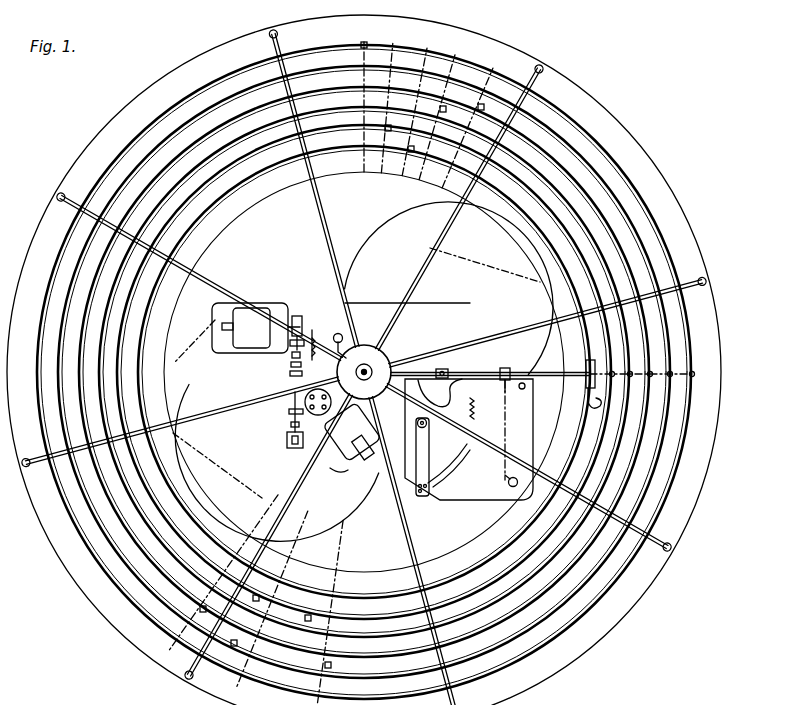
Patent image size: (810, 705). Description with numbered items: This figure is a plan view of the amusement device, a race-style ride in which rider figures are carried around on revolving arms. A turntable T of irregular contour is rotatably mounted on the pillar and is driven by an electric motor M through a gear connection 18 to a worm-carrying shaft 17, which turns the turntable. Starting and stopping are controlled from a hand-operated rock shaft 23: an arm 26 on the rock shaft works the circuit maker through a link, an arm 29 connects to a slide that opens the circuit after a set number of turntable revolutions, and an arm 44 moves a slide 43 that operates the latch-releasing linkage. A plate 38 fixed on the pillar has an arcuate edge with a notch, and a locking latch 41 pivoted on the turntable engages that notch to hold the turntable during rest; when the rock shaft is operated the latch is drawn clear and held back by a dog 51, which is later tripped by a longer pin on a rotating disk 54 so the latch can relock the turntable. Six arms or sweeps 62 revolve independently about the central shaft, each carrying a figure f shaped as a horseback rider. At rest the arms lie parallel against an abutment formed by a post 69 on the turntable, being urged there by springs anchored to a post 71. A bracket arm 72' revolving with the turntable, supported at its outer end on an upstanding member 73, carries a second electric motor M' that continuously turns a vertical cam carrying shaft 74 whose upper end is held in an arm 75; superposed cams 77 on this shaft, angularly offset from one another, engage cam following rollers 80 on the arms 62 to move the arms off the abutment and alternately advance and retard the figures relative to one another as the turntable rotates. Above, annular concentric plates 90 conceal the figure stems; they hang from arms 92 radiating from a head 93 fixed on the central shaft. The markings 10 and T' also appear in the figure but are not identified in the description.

The rod 10 is at (504, 394).
The shaft 17 is at (301, 338).
The gear connection 18 is at (296, 316).
The rock shaft 23 is at (287, 440).
The arm 26 is at (291, 425).
The arm 29 is at (289, 412).
The plate 38 is at (336, 337).
The locking latch 41 is at (318, 362).
The slide 43 is at (292, 356).
The arm 44 is at (291, 366).
The dog 51 is at (292, 376).
The disk 54 is at (322, 448).
The arms or sweeps 62 is at (380, 200).
The post 69 is at (522, 389).
The post 71 is at (508, 486).
The bracket arm 72' is at (333, 485).
The member 73 is at (462, 468).
The cam carrying shaft 74 is at (416, 428).
The arm 75 is at (416, 460).
The cams 77 is at (446, 385).
The cam following rollers 80 is at (455, 372).
The plates 90 is at (472, 560).
The arms 92 is at (322, 228).
The head 93 is at (363, 345).
The electric motor M is at (256, 328).
The electric motor M' is at (354, 436).
The turntable T is at (449, 288).
The table T' is at (276, 430).
The figure f is at (586, 390).